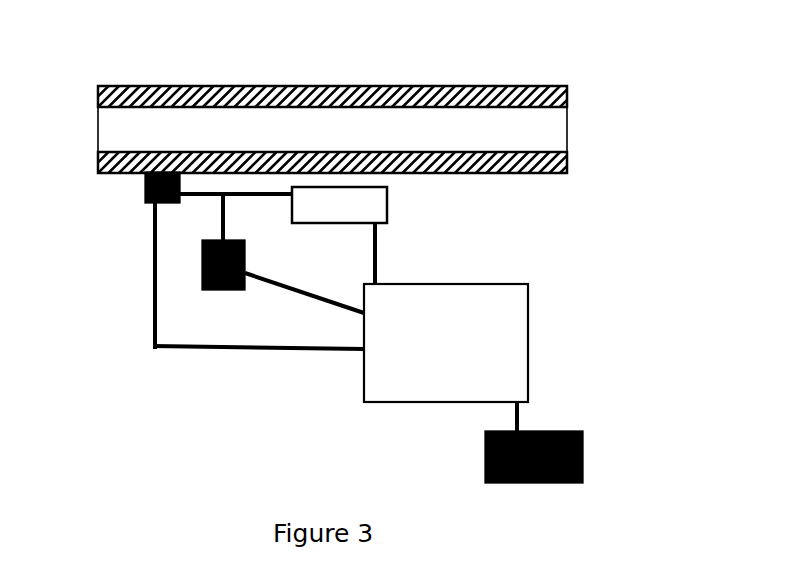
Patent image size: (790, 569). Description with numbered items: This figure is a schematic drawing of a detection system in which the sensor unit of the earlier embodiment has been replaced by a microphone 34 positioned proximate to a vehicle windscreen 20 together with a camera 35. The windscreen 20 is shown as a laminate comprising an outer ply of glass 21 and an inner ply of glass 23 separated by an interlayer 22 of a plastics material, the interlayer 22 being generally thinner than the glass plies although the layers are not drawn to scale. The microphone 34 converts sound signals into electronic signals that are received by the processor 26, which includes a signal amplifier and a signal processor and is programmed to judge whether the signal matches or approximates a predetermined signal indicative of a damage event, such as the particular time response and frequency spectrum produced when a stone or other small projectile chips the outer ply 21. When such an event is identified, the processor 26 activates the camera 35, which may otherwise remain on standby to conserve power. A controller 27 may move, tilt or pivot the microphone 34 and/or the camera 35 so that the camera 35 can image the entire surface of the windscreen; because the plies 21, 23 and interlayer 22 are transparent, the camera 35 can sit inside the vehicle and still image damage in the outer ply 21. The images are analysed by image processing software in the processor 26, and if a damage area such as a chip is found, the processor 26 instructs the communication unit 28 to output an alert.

The vehicle windscreen 20 is at (362, 115).
The outer ply of glass 21 is at (424, 88).
The interlayer 22 is at (563, 127).
The inner ply of glass 23 is at (518, 168).
The processor 26 is at (528, 337).
The controller 27 is at (217, 290).
The communication unit 28 is at (583, 443).
The microphone 34 is at (145, 190).
The camera 35 is at (386, 207).